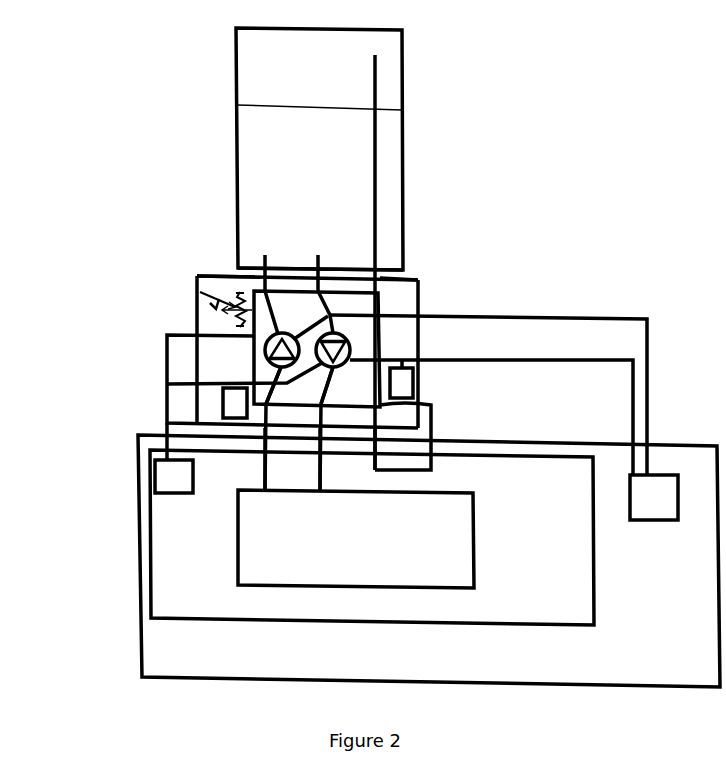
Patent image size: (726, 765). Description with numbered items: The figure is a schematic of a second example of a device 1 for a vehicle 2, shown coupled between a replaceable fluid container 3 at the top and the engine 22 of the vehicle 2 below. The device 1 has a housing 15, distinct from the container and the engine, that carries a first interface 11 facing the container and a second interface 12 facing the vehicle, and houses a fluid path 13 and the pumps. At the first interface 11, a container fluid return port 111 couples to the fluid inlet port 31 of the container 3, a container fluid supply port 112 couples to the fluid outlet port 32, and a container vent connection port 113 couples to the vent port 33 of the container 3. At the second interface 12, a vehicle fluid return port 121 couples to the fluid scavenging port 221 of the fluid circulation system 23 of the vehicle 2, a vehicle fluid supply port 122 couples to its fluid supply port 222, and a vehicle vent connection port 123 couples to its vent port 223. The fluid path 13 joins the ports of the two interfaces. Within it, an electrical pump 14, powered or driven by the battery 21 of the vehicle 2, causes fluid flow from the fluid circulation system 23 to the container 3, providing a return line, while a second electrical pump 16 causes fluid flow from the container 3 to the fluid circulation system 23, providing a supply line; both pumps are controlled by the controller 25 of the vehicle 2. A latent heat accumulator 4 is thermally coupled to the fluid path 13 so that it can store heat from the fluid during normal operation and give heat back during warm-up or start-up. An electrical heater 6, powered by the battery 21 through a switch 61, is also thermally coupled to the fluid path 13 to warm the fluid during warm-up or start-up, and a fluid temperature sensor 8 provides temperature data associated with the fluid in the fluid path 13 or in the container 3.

The device 1 is at (315, 328).
The vehicle 2 is at (693, 503).
The replaceable fluid container 3 is at (256, 74).
The latent heat accumulator 4 is at (229, 412).
The electrical heater 6 is at (227, 290).
The fluid temperature sensor 8 is at (407, 392).
The first interface 11 is at (420, 279).
The second interface 12 is at (292, 381).
The fluid path 13 is at (340, 397).
The electrical pump 14 is at (243, 335).
The housing 15 is at (197, 353).
The electrical pump 16 is at (345, 353).
The battery 21 is at (173, 477).
The engine 22 is at (545, 501).
The fluid circulation system 23 is at (418, 534).
The controller 25 is at (641, 501).
The fluid inlet port 31 is at (262, 260).
The fluid outlet port 32 is at (320, 258).
The vent port 33 is at (378, 265).
The switch 61 is at (199, 294).
The fluid port 111 is at (237, 274).
The fluid port 112 is at (313, 272).
The vent fluid port 113 is at (392, 277).
The fluid port 121 is at (262, 398).
The fluid port 122 is at (320, 406).
The vent fluid port 123 is at (428, 404).
The fluid scavenging port 221 is at (262, 458).
The fluid supply port 222 is at (317, 458).
The vent port 223 is at (372, 455).